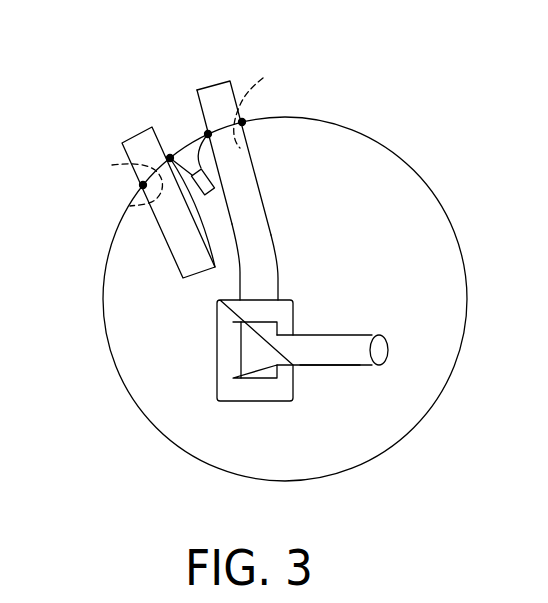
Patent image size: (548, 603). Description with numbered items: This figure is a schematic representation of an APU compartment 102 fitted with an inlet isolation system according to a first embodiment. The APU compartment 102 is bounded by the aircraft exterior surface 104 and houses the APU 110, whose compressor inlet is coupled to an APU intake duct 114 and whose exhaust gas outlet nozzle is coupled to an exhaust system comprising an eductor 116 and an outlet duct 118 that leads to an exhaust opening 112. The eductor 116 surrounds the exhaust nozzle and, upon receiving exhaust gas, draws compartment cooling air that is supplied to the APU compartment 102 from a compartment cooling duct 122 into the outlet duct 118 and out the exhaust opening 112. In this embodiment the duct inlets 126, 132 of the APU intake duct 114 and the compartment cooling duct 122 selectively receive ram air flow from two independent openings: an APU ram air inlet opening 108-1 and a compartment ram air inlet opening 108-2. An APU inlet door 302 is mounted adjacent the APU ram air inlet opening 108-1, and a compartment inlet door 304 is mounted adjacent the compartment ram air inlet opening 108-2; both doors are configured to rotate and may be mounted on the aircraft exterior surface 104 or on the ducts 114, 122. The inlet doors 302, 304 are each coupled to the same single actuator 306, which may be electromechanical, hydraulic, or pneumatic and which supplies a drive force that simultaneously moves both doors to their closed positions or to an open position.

The APU compartment 102 is at (437, 279).
The aircraft exterior surface 104 is at (408, 163).
The APU ram air inlet opening 108-1 is at (273, 98).
The compartment ram air inlet opening 108-2 is at (96, 178).
The APU 110 is at (293, 320).
The exhaust opening 112 is at (387, 348).
The APU intake duct 114 is at (263, 193).
The eductor 116 is at (258, 371).
The outlet duct 118 is at (330, 368).
The compartment cooling duct 122 is at (170, 252).
The duct inlet 126 is at (240, 148).
The duct inlet 132 is at (130, 206).
The APU inlet door 302 is at (213, 86).
The compartment inlet door 304 is at (133, 138).
The actuator 306 is at (205, 195).